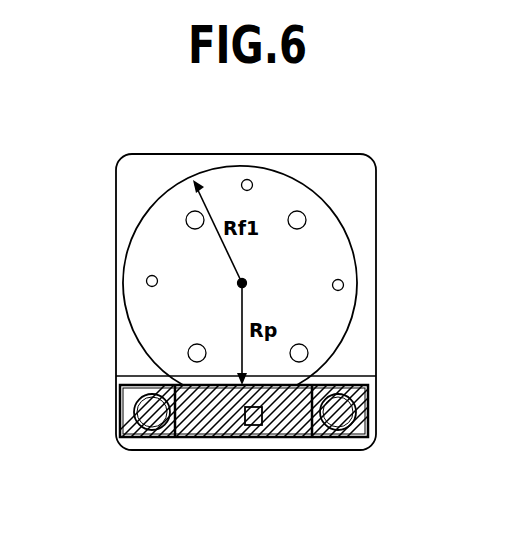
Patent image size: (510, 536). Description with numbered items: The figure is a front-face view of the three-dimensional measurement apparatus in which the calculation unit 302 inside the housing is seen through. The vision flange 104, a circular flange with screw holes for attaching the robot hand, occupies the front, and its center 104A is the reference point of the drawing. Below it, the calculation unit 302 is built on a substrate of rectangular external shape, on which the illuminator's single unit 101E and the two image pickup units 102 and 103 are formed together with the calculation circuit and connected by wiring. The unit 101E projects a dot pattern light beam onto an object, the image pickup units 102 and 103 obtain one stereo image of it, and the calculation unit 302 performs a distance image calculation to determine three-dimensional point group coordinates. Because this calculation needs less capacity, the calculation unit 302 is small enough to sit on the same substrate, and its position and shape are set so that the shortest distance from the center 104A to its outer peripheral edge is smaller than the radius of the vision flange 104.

The vision flange 104 is at (322, 195).
The center of the circle of the vision flange 104A is at (246, 283).
The calculation unit 302 is at (150, 388).
The image pickup unit 103 is at (121, 428).
The image pickup unit 102 is at (367, 420).
The unit of the illuminator 101E is at (252, 426).